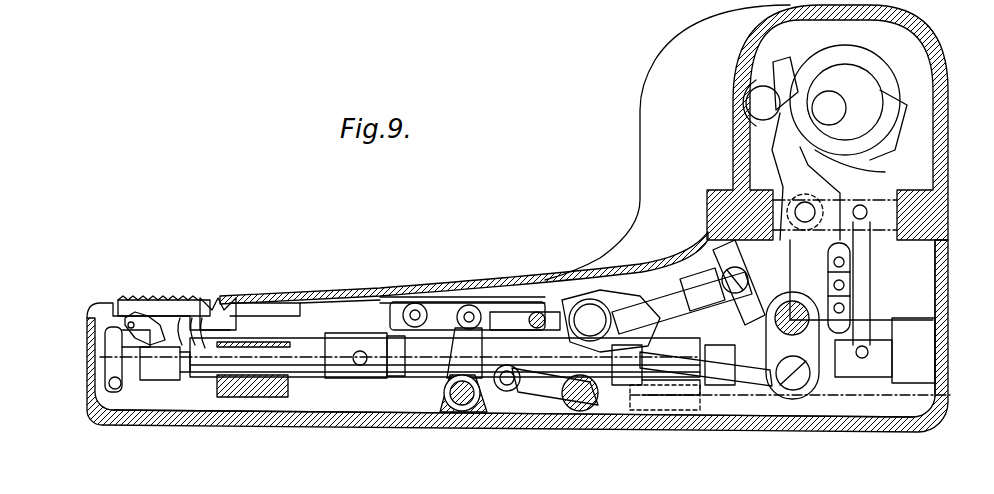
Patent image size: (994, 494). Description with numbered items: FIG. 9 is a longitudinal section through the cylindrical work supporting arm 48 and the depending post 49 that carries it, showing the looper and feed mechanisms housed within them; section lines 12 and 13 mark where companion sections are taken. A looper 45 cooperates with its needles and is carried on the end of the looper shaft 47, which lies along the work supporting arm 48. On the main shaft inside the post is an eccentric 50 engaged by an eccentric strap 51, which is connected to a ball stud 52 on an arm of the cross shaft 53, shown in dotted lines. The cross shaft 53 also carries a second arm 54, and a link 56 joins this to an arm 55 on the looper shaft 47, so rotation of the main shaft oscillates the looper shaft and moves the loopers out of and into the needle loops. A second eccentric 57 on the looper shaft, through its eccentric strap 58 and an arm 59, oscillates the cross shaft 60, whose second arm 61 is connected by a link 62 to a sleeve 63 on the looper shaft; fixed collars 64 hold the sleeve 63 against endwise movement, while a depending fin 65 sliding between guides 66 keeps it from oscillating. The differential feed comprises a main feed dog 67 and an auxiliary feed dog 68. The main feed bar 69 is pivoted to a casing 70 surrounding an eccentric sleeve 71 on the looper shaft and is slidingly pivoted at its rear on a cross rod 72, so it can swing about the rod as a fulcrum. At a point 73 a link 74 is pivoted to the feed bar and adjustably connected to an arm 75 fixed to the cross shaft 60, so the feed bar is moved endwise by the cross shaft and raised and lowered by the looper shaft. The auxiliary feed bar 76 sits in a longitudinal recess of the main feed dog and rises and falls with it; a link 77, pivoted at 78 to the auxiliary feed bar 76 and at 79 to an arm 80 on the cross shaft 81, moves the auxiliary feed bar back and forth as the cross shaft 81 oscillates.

The section line 12 is at (308, 325).
The needles 13 is at (468, 293).
The looper 45 is at (191, 333).
The looper shaft 47 is at (256, 303).
The work supporting arm 48 is at (422, 290).
The depending post 49 is at (948, 150).
The eccentric 50 is at (870, 93).
The eccentric strap 51 is at (847, 152).
The ball stud 52 is at (800, 211).
The cross shaft 53 is at (940, 258).
The second arm 54 is at (862, 247).
The arm 55 is at (866, 312).
The link 56 is at (835, 272).
The second eccentric 57 is at (755, 128).
The eccentric strap 58 is at (765, 155).
The arm 59 is at (739, 282).
The cross shaft 60 is at (793, 310).
The second arm 61 is at (812, 381).
The link 62 is at (757, 373).
The sleeve 63 is at (647, 373).
The fixed collars 64 is at (718, 373).
The depending fin 65 is at (665, 417).
The guides 66 is at (697, 397).
The main feed dog 67 is at (153, 300).
The auxiliary feed dog 68 is at (208, 300).
The main feed bar 69 is at (308, 327).
The casing 70 is at (347, 355).
The eccentric sleeve 71 is at (390, 360).
The cross rod 72 is at (537, 312).
The pivot point 73 is at (590, 300).
The link 74 is at (137, 317).
The arm 75 is at (162, 328).
The auxiliary feed bar 76 is at (120, 363).
The link 77 is at (439, 305).
The pivot 78 is at (413, 304).
The pivot 79 is at (478, 302).
The arm 80 is at (463, 377).
The cross shaft 81 is at (484, 420).